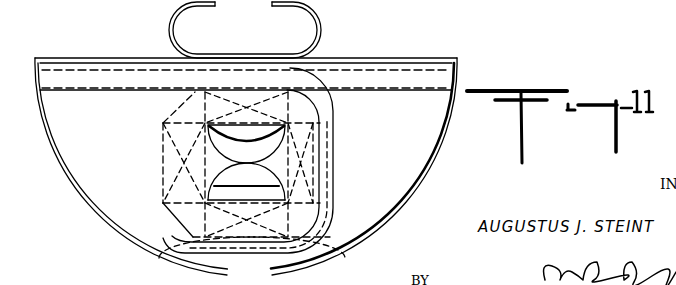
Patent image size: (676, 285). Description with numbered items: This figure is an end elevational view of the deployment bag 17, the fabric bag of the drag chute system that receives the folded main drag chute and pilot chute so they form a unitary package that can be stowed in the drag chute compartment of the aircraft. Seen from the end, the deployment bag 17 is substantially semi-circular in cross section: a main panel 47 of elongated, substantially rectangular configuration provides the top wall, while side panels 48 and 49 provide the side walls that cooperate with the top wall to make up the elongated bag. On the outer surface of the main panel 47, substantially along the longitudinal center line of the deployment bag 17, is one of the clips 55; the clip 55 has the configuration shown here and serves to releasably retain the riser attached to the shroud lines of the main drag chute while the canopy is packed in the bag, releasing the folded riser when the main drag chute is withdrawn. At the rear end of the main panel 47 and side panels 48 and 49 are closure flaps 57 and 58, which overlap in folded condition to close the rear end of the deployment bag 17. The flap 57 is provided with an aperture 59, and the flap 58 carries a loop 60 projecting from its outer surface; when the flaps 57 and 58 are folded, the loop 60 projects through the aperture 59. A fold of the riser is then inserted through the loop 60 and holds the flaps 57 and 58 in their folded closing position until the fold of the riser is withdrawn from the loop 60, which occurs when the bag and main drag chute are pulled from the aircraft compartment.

The deployment bag 17 is at (441, 138).
The main panel 47 is at (405, 58).
The side panel 48 is at (88, 206).
The side panel 49 is at (408, 202).
The clip 55 is at (320, 22).
The closure flap 57 is at (128, 159).
The closure flap 58 is at (410, 145).
The aperture 59 is at (207, 168).
The loop 60 is at (265, 143).